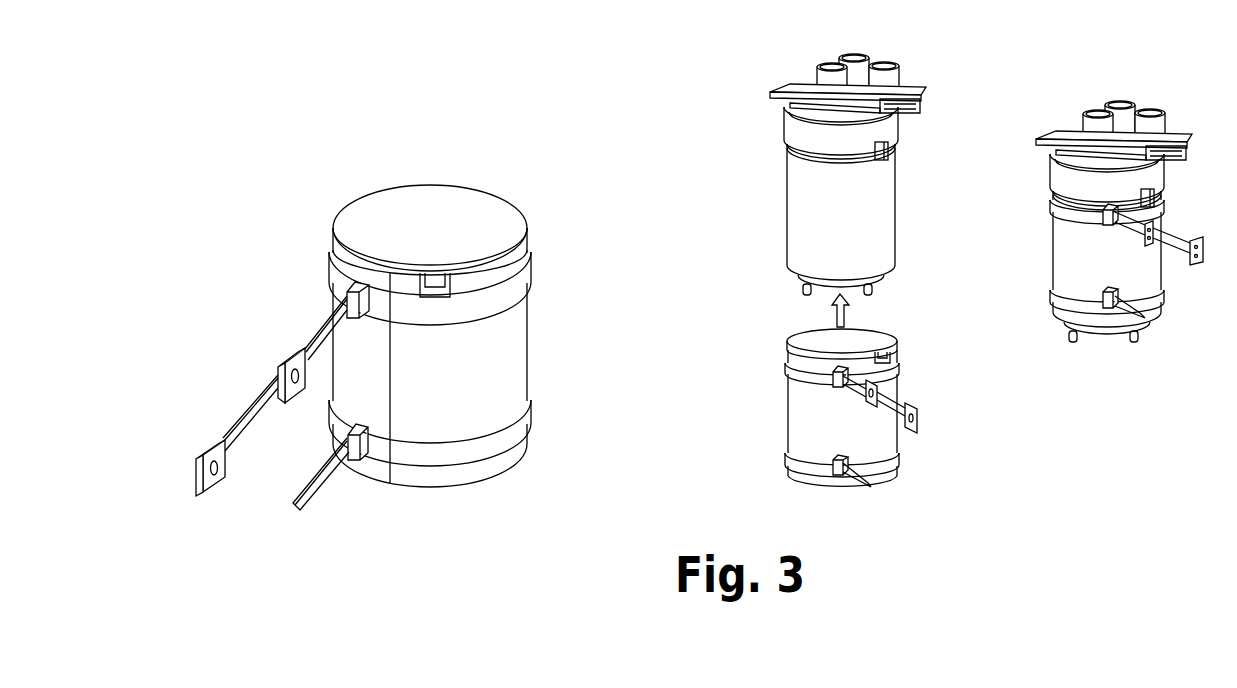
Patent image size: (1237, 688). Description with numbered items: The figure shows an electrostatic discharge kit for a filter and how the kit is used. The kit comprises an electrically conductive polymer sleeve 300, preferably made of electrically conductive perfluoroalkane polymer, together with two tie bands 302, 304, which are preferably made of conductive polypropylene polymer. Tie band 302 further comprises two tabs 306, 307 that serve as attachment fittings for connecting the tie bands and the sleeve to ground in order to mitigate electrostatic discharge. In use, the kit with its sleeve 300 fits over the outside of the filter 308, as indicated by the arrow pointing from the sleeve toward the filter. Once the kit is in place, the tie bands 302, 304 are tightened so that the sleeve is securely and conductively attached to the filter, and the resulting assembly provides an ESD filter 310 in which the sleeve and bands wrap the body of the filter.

The electrically conductive polymer sleeve 300 is at (512, 203).
The tie band 302 is at (530, 270).
The tie band 304 is at (530, 410).
The tab 306 is at (283, 357).
The tab 307 is at (203, 446).
The filter 308 is at (895, 183).
The ESD filter 310 is at (1173, 127).